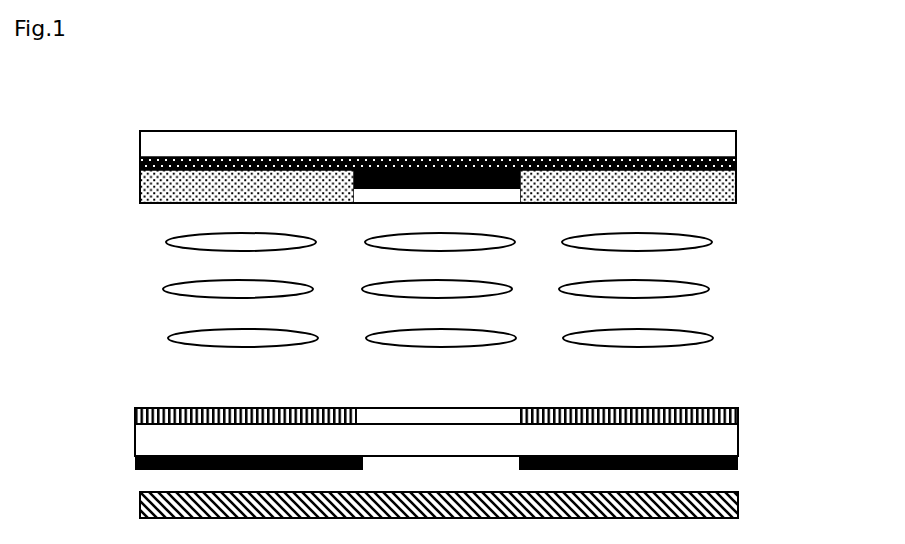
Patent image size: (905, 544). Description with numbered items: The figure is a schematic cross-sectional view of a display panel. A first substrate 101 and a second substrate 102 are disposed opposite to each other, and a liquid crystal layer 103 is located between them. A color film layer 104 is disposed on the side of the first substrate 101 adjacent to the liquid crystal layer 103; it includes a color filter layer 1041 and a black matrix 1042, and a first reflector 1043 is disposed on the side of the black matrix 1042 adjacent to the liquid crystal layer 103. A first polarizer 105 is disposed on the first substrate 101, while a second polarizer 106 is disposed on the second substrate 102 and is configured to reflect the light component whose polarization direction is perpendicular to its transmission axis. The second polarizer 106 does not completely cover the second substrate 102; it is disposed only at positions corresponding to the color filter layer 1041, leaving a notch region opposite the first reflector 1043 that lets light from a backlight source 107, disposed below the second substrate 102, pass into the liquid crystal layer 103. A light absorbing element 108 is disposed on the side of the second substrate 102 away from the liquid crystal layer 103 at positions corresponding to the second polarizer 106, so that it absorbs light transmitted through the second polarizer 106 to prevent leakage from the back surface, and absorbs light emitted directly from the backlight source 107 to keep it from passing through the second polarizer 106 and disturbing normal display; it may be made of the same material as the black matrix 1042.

The first substrate 101 is at (725, 139).
The first polarizer 105 is at (725, 162).
The color film layer 104 is at (479, 156).
The color filter layer 1041 is at (725, 188).
The black matrix 1042 is at (443, 158).
The first reflector 1043 is at (491, 194).
The liquid crystal layer 103 is at (728, 279).
The second polarizer 106 is at (733, 419).
The second substrate 102 is at (727, 440).
The light absorbing element 108 is at (735, 463).
The backlight source 107 is at (738, 507).